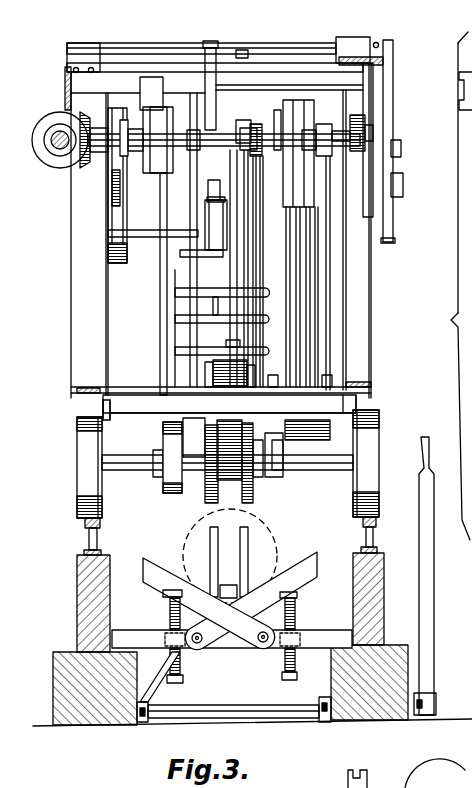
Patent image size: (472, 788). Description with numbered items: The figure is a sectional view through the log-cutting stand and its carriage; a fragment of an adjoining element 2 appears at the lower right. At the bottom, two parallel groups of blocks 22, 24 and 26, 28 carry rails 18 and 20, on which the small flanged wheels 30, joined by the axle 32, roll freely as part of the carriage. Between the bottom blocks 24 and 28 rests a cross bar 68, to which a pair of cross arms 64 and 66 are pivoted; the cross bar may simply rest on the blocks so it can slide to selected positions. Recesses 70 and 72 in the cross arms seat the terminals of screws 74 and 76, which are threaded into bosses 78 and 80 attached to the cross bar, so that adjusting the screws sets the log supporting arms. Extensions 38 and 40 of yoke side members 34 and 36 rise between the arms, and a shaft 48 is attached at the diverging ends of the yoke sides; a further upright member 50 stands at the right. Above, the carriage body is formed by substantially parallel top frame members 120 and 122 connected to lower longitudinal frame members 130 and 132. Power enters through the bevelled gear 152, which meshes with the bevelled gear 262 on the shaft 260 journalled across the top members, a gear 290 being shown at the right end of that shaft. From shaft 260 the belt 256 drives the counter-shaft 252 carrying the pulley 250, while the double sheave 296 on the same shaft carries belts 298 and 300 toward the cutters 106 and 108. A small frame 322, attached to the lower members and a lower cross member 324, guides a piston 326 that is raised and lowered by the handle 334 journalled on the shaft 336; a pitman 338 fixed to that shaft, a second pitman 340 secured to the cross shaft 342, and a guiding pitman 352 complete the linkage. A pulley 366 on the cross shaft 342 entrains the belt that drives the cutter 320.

The adjacent figure element 2 is at (455, 787).
The rail 18 is at (376, 530).
The rail 20 is at (86, 536).
The block 22 is at (381, 576).
The block 24 is at (399, 645).
The block 26 is at (82, 597).
The block 28 is at (62, 677).
The flanged wheel 30 is at (374, 443).
The axle 32 is at (314, 466).
The side member 34 is at (316, 673).
The side member 36 is at (167, 681).
The extension 38 is at (249, 547).
The extension 40 is at (210, 537).
The shaft 48 is at (236, 721).
The vertical bar 50 is at (428, 597).
The cross arm 64 is at (294, 572).
The cross arm 66 is at (153, 570).
The cross bar 68 is at (338, 629).
The recess 70 is at (288, 589).
The recess 72 is at (166, 590).
The screw 74 is at (280, 660).
The screw 76 is at (180, 663).
The boss 78 is at (165, 639).
The boss 80 is at (300, 637).
The cutter 106 is at (249, 377).
The cutter 108 is at (291, 431).
The top frame member 120 is at (66, 80).
The top frame member 122 is at (362, 55).
The lower frame member 130 is at (369, 387).
The lower frame member 132 is at (80, 400).
The bevelled gear 152 is at (52, 120).
The pulley 250 is at (233, 197).
The counter-shaft 252 is at (270, 271).
The belt 256 is at (110, 190).
The shaft 260 is at (338, 127).
The bevelled gear 262 is at (84, 166).
The right gear 290 is at (369, 120).
The double sheave 296 is at (333, 138).
The belt 298 is at (314, 317).
The belt 300 is at (296, 282).
The cutter 320 is at (254, 487).
The small frame 322 is at (183, 318).
The lower cross member 324 is at (128, 397).
The piston 326 is at (222, 272).
The handle 334 is at (389, 71).
The shaft 336 is at (289, 47).
The pitman 338 is at (210, 42).
The second pitman 340 is at (228, 104).
The cross shaft 342 is at (180, 130).
The second pitman 352 is at (256, 156).
The second pulley 366 is at (178, 173).